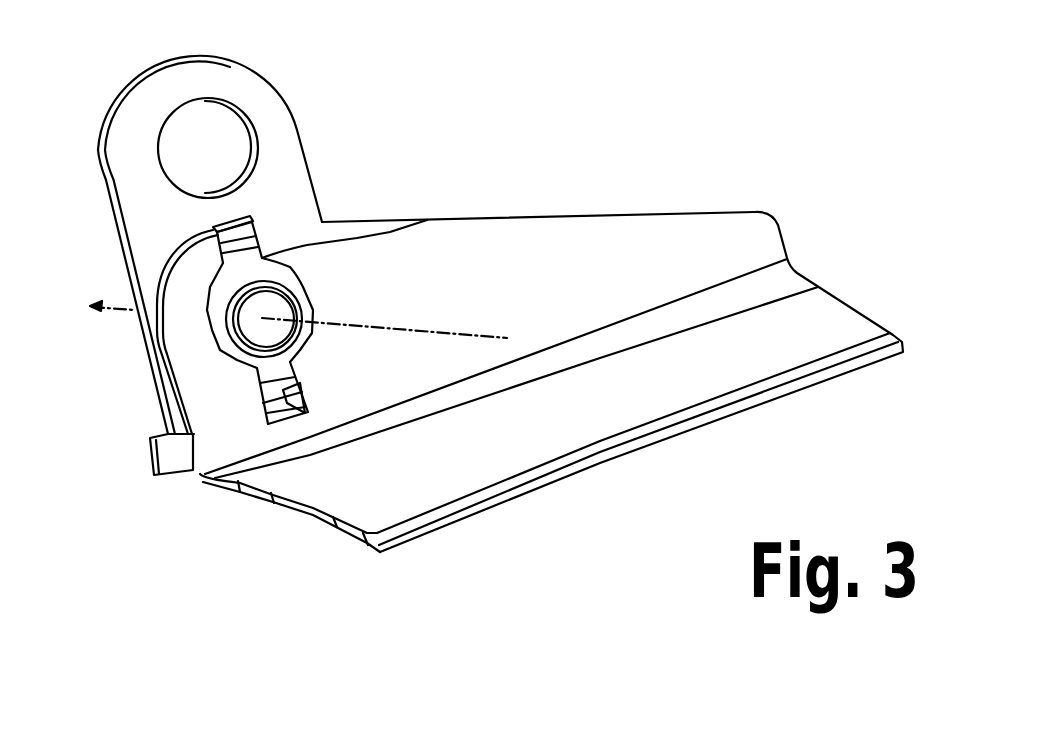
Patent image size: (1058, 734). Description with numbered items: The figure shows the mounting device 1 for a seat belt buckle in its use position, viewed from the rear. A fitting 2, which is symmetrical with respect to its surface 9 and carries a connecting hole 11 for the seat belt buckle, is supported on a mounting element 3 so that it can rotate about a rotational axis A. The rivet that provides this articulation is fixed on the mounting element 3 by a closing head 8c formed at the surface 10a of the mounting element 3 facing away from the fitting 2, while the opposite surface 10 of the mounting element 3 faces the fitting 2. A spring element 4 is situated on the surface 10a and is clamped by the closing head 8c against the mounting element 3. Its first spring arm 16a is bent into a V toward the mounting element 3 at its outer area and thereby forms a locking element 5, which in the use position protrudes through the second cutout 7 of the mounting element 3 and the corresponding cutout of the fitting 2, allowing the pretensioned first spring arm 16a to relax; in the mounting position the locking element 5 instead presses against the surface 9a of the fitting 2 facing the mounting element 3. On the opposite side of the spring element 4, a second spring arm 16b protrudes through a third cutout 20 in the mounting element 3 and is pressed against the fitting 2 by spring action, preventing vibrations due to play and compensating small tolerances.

The mounting device 1 is at (520, 135).
The fitting 2 is at (277, 166).
The mounting element 3 is at (747, 240).
The spring element 4 is at (297, 290).
The locking element 5 is at (262, 400).
The second cutout 7 is at (307, 413).
The closing head 8c is at (277, 333).
The surface of the fitting 9 is at (257, 63).
The surface of the fitting facing the mounting element 9a is at (285, 134).
The surface of the mounting element 10 is at (622, 212).
The surface of the mounting element facing away from the fitting 10a is at (576, 238).
The connecting hole 11 is at (180, 148).
The first spring arm 16a is at (258, 373).
The second spring arm 16b is at (427, 220).
The third cutout 20 is at (263, 223).
The rotational axis A is at (293, 333).